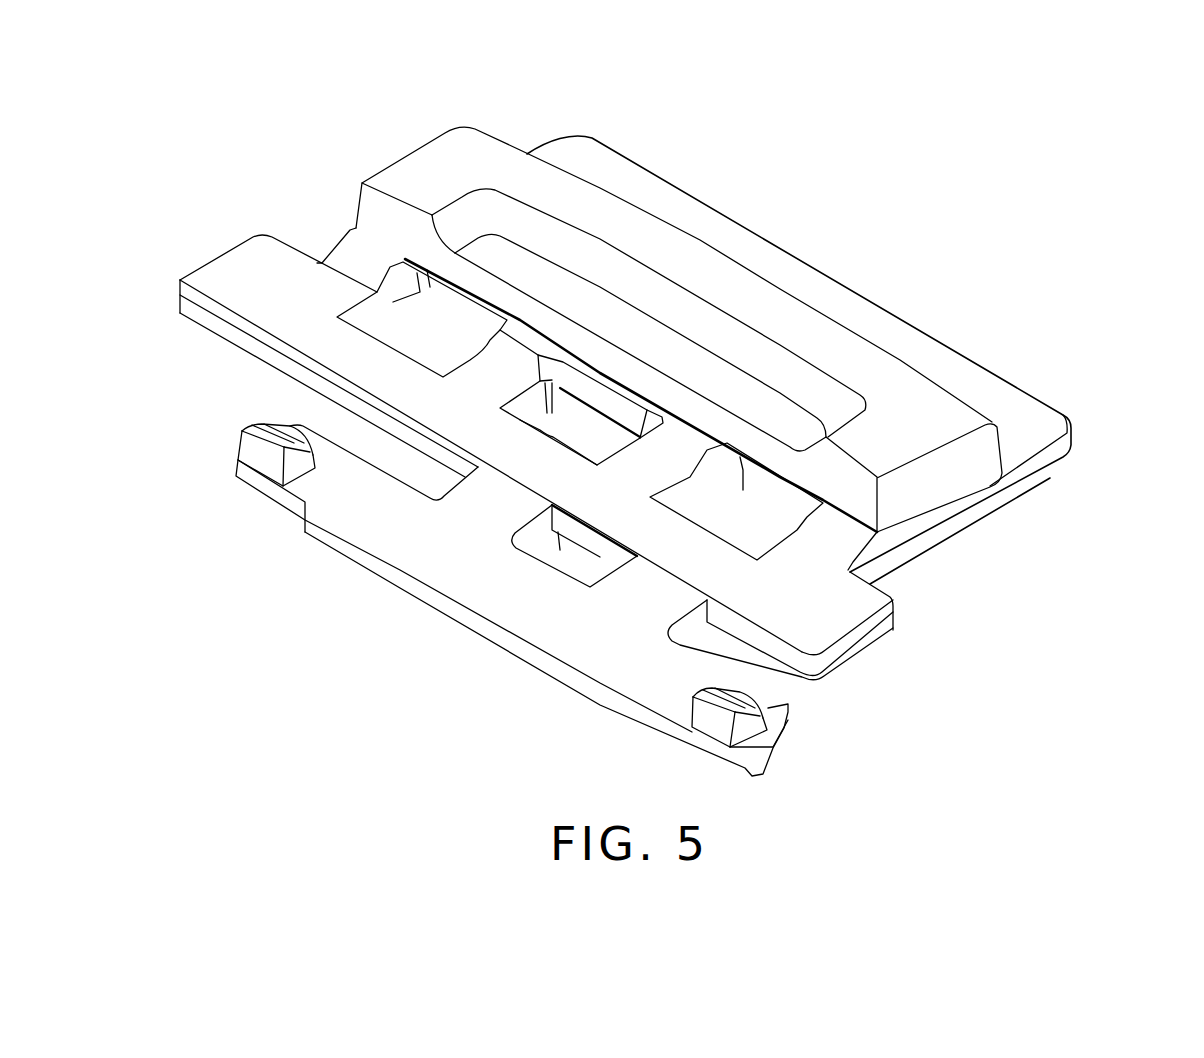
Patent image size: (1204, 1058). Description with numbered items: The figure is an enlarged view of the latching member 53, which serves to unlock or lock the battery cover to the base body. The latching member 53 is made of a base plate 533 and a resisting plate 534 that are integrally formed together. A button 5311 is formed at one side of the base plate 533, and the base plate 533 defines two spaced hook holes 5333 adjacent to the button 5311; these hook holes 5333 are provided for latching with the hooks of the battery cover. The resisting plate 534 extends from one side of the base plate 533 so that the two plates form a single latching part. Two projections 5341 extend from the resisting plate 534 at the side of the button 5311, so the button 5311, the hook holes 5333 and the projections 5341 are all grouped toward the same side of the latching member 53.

The latching member 53 is at (988, 170).
The base plate 533 is at (1030, 465).
The button 5311 is at (930, 417).
The hook holes 5333 is at (430, 330).
The resisting plate 534 is at (488, 625).
The projections 5341 is at (735, 702).